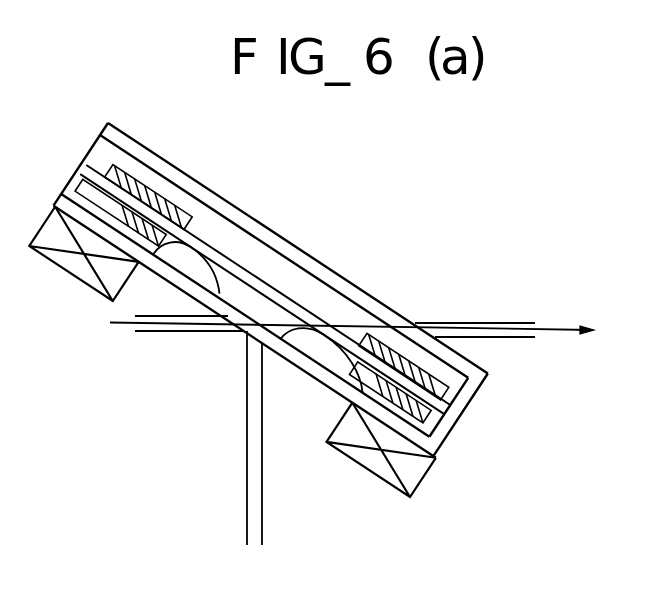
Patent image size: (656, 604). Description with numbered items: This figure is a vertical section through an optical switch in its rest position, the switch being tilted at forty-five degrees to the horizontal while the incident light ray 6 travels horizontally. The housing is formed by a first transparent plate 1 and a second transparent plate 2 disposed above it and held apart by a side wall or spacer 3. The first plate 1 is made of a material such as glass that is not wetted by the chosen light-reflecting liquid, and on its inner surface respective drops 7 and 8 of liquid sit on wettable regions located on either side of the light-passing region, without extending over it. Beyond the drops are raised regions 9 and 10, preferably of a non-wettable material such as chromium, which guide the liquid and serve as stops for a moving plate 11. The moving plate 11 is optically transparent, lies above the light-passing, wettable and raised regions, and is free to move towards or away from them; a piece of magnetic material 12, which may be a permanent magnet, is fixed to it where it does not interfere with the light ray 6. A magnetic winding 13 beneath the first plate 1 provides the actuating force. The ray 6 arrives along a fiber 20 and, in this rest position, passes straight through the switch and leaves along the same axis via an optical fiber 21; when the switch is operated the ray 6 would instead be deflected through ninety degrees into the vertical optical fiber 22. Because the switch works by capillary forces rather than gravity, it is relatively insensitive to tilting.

The first transparent plate 1 is at (332, 388).
The second transparent plate 2 is at (340, 282).
The side wall or spacer 3 is at (455, 415).
The light ray 6 is at (120, 323).
The drop of liquid 7 is at (192, 264).
The drop of liquid 8 is at (315, 360).
The raised region 9 is at (95, 196).
The raised region 10 is at (437, 430).
The moving plate 11 is at (238, 282).
The piece of magnetic material 12 is at (186, 229).
The magnetic winding 13 is at (415, 478).
The fiber 20 is at (175, 333).
The optical fiber 21 is at (478, 323).
The optical fiber 22 is at (246, 480).